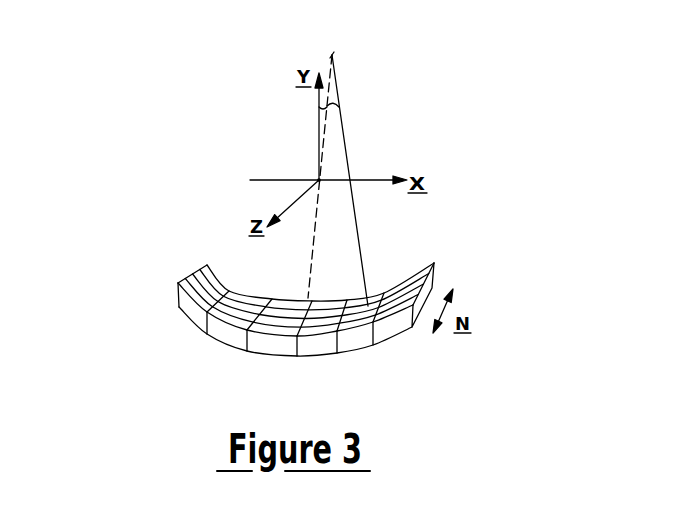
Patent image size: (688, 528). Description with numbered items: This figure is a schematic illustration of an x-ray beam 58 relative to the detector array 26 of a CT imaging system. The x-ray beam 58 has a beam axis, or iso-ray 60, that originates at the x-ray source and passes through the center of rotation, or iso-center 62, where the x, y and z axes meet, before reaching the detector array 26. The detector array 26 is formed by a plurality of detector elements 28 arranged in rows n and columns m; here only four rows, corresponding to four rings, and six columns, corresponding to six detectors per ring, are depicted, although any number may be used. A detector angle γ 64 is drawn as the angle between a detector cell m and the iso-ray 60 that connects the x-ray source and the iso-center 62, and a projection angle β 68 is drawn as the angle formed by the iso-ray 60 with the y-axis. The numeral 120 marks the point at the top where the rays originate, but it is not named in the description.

The x-ray source focal spot 120 is at (332, 56).
The x-ray beam 58 is at (345, 146).
The beam axis (iso-ray) 60 is at (310, 253).
The center of rotation (iso-center) 62 is at (319, 180).
The projection angle β 68 is at (222, 80).
The detector angle γ 64 is at (338, 111).
The detector array 26 is at (167, 319).
The detector elements 28 is at (218, 342).